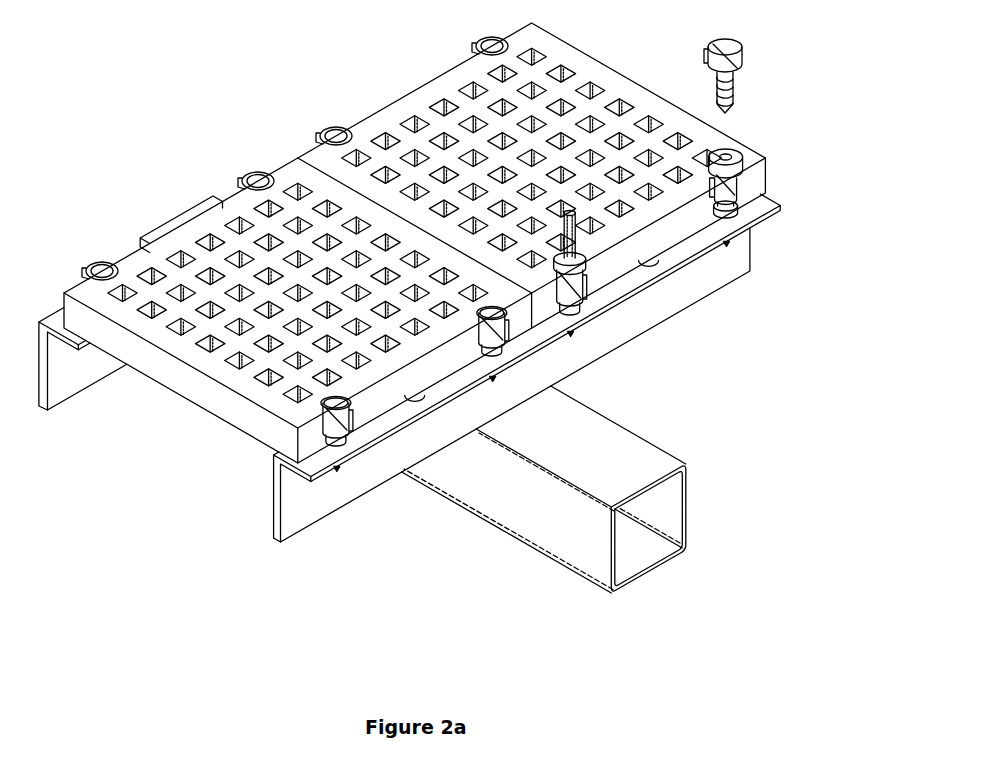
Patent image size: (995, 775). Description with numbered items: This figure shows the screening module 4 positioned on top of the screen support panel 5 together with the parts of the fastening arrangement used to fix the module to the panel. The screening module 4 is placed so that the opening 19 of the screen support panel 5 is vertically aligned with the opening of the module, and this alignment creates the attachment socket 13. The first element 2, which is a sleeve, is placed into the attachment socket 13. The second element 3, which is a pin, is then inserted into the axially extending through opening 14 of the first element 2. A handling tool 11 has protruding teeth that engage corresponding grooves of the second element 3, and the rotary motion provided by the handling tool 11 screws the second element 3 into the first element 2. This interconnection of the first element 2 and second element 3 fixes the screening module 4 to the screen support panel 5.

The first element 2 is at (737, 175).
The second element 3 is at (735, 50).
The screening media module 4 is at (623, 77).
The screen support panel 5 is at (748, 262).
The handling tool 11 is at (582, 268).
The attachment socket 13 is at (735, 210).
The axially extending through opening 14 is at (728, 152).
The opening of the screen support panel 19 is at (656, 264).